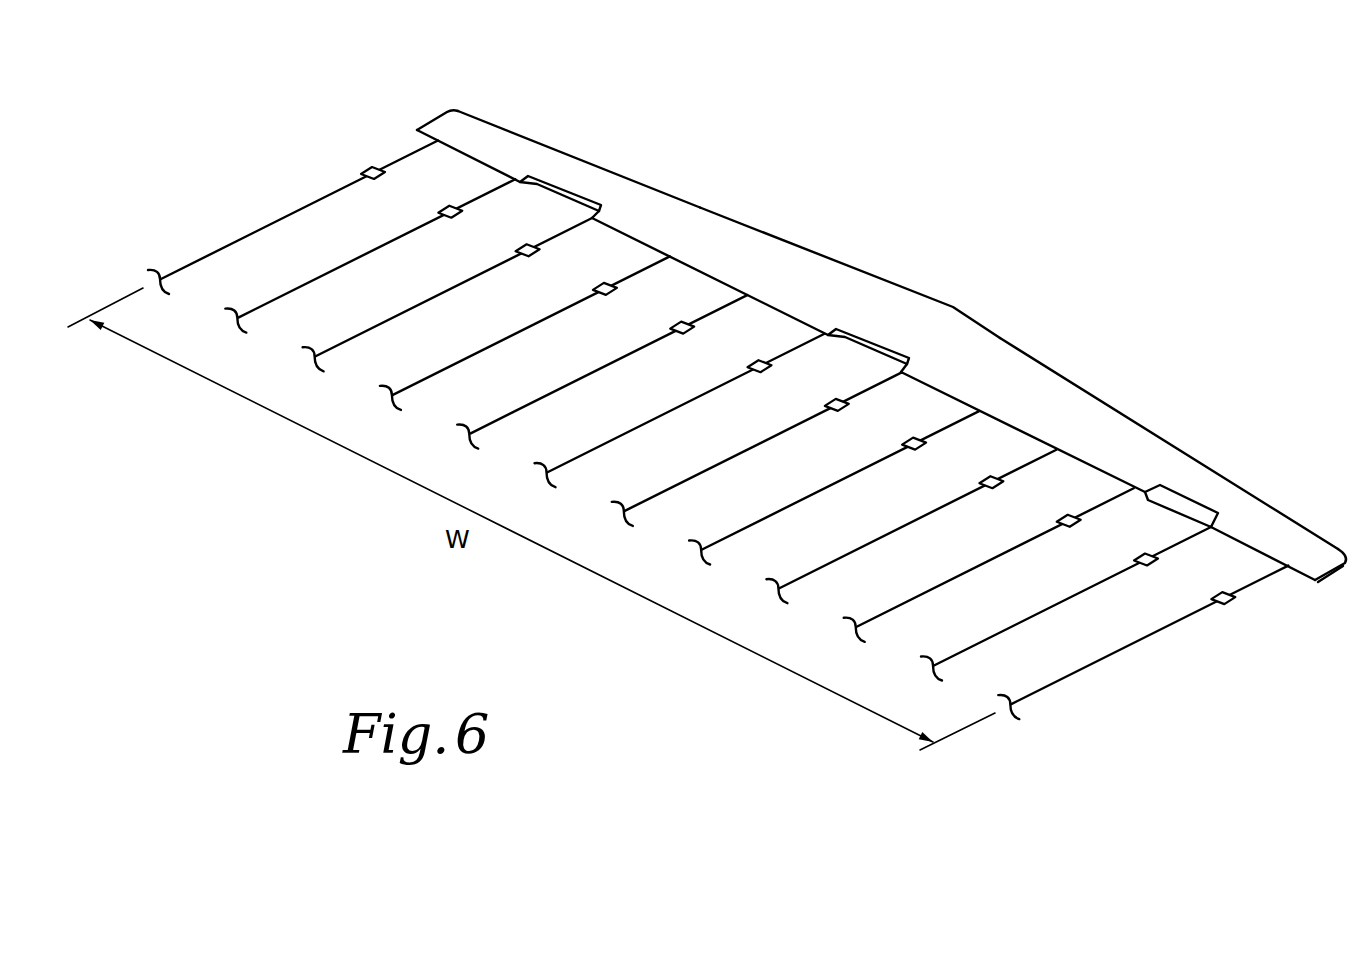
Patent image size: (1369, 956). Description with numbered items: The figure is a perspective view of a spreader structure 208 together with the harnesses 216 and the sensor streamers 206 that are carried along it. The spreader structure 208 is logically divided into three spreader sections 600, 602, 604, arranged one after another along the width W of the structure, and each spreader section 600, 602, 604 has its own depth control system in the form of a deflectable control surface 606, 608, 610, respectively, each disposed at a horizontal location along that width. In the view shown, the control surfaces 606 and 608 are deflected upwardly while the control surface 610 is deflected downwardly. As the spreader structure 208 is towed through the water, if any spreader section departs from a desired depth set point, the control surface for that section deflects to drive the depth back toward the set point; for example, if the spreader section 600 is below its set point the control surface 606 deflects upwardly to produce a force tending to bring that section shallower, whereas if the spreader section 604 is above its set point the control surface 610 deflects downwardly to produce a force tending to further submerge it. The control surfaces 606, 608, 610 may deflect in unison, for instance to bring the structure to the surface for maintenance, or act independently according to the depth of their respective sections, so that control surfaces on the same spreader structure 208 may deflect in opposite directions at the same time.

The sensor streamer 206 is at (278, 220).
The spreader structure 208 is at (1003, 362).
The harness 216 is at (413, 155).
The spreader section 600 is at (661, 154).
The spreader section 602 is at (991, 281).
The spreader section 604 is at (1257, 463).
The control surface 606 is at (562, 190).
The control surface 608 is at (875, 345).
The control surface 610 is at (1178, 497).